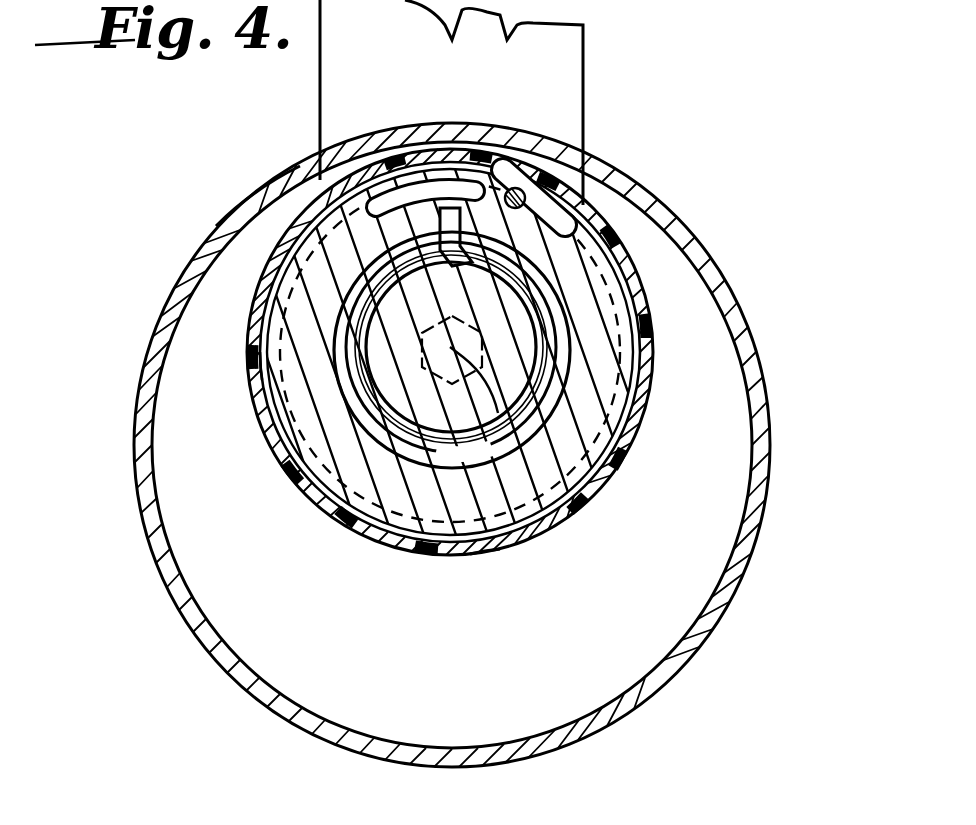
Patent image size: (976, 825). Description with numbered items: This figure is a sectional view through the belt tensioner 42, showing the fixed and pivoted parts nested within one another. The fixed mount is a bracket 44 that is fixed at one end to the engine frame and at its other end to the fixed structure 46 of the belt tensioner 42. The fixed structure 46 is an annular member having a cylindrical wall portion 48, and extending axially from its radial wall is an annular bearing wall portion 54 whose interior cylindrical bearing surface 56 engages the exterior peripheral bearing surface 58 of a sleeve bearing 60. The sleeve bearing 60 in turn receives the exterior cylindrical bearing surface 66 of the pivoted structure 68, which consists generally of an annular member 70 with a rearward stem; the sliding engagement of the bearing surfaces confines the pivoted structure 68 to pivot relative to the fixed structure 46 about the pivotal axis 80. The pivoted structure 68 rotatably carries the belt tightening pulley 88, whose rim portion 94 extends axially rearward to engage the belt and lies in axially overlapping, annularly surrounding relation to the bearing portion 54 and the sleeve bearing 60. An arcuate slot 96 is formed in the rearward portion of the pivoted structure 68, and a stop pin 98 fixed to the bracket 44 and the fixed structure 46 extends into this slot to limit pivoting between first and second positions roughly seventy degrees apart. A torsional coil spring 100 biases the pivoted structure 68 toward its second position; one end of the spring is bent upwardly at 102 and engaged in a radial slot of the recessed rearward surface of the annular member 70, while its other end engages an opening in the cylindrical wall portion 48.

The belt tensioner 42 is at (680, 204).
The bracket 44 is at (568, 72).
The fixed structure 46 is at (616, 490).
The cylindrical wall portion 48 is at (348, 290).
The annular bearing wall portion 54 is at (648, 394).
The interior cylindrical bearing surface 56 is at (383, 540).
The exterior peripheral bearing surface 58 is at (273, 433).
The sleeve bearing 60 is at (307, 497).
The exterior cylindrical bearing surface 66 is at (478, 548).
The pivoted structure 68 is at (260, 368).
The annular member 70 is at (612, 336).
The pivotal axis 80 is at (464, 446).
The belt tightening pulley 88 is at (734, 292).
The rim portion 94 is at (217, 227).
The arcuate slot 96 is at (432, 178).
The stop pin 98 is at (565, 183).
The torsional coil spring 100 is at (358, 333).
The bent end of torsional spring 102 is at (452, 222).